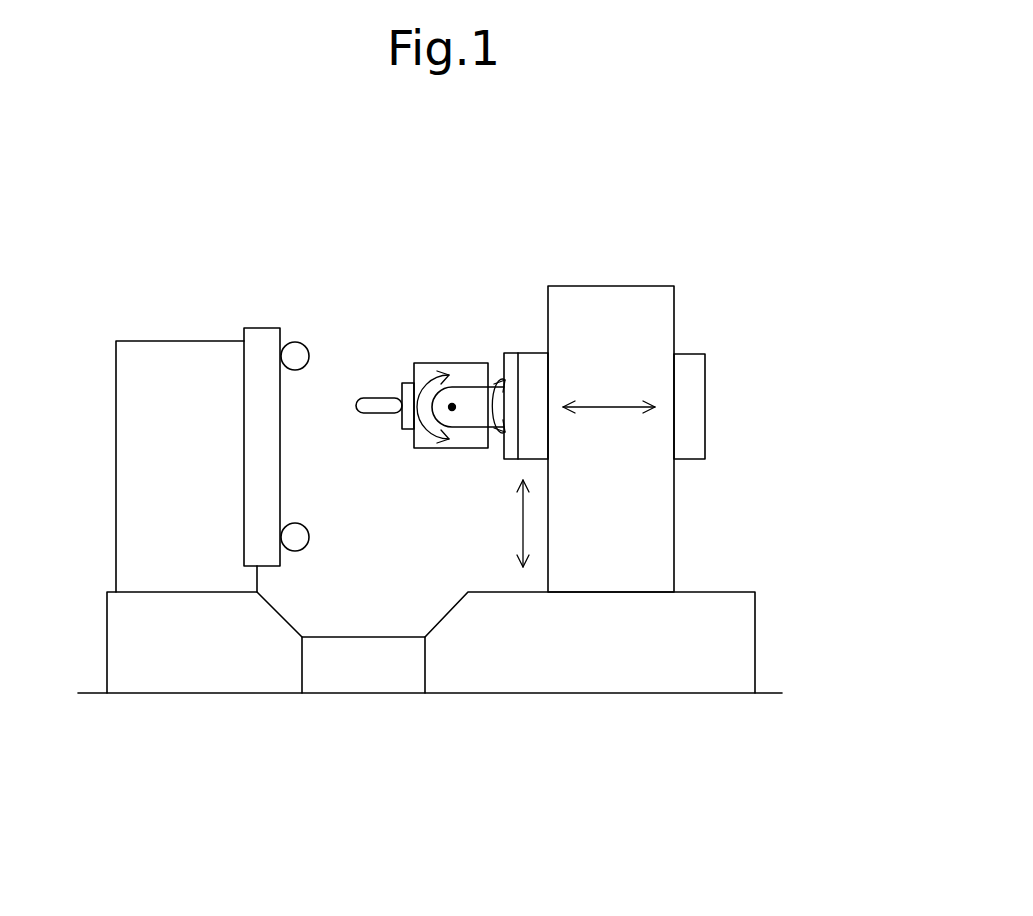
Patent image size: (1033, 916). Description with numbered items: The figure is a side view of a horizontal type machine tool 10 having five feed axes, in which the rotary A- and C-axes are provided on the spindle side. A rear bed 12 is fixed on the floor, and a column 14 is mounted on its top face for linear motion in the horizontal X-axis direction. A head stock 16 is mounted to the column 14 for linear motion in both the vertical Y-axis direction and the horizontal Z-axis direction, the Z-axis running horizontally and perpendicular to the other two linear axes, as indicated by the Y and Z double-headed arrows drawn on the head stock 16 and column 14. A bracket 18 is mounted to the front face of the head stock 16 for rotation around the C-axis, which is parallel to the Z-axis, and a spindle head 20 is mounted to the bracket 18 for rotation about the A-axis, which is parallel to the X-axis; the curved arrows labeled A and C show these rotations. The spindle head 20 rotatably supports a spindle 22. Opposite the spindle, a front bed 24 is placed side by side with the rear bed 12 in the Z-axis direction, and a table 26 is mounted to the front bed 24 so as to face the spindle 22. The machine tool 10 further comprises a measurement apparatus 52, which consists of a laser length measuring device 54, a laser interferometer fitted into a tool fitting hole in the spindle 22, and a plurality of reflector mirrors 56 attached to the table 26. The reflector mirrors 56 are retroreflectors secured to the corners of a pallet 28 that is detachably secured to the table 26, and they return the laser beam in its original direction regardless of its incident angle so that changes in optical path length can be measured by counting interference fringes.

The machine tool 10 is at (661, 190).
The rear bed 12 is at (588, 677).
The column 14 is at (663, 330).
The head stock 16 is at (530, 360).
The bracket 18 is at (475, 420).
The spindle head 20 is at (456, 363).
The spindle 22 is at (405, 429).
The front bed 24 is at (173, 680).
The table 26 is at (153, 360).
The pallet 28 is at (255, 340).
The measurement apparatus 52 is at (384, 342).
The laser length measuring device 54 is at (379, 371).
The reflector mirrors 56 is at (297, 363).
The A-axis A is at (428, 363).
The C-axis C is at (475, 388).
The Y-axis Y is at (523, 523).
The Z-axis Z is at (608, 407).